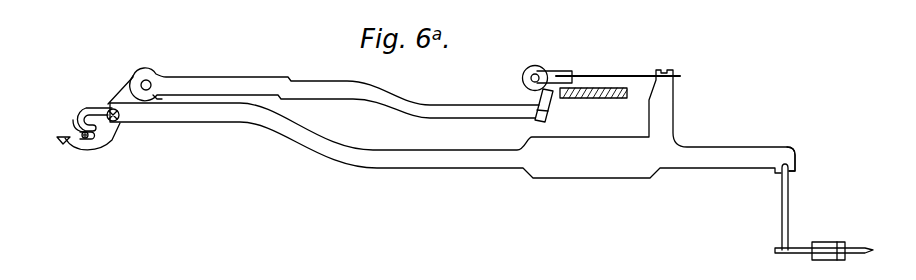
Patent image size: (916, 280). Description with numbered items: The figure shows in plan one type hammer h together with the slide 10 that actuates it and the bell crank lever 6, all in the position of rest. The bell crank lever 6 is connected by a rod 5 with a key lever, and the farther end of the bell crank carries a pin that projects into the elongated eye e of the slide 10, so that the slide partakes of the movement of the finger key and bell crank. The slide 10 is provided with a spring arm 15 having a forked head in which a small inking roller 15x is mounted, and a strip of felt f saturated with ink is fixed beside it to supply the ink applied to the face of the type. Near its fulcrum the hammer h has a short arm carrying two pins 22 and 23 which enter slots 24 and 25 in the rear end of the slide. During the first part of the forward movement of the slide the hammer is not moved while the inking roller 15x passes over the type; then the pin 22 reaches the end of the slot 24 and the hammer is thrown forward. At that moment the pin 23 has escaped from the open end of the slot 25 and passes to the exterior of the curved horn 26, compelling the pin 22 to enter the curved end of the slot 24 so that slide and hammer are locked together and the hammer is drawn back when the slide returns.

The slide 10 is at (452, 124).
The hammer h is at (330, 95).
The spring arm 15 is at (620, 76).
The inking roller 15x is at (529, 73).
The strip of felt f is at (593, 103).
The eye e is at (796, 167).
The bell crank lever 6 is at (807, 254).
The rod 5 is at (866, 254).
The pin 22 is at (118, 120).
The pin 23 is at (95, 137).
The slot 24 is at (99, 108).
The slot 25 is at (63, 145).
The curved horn 26 is at (84, 153).